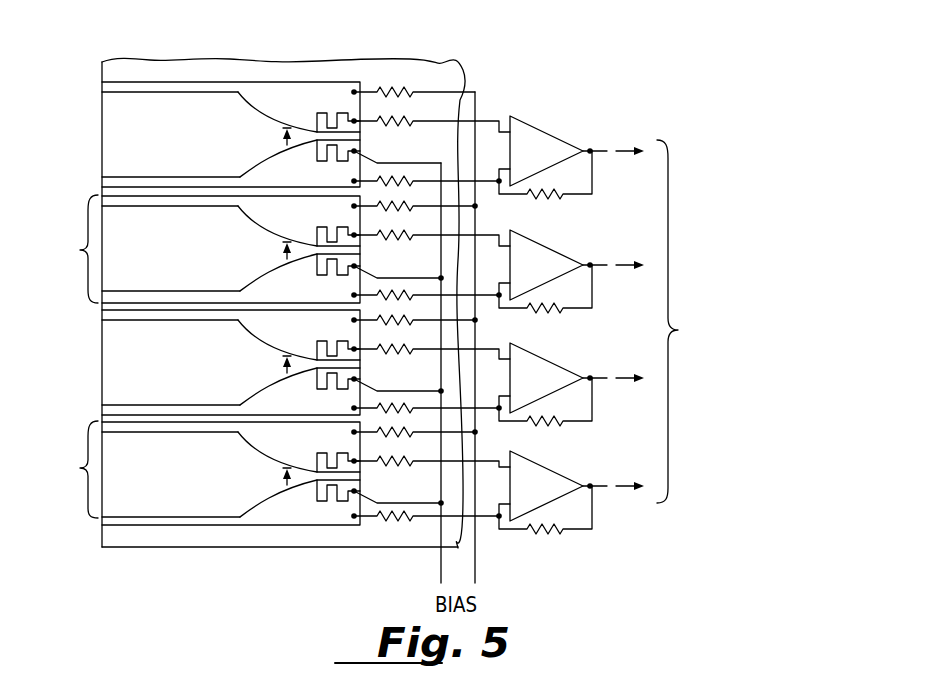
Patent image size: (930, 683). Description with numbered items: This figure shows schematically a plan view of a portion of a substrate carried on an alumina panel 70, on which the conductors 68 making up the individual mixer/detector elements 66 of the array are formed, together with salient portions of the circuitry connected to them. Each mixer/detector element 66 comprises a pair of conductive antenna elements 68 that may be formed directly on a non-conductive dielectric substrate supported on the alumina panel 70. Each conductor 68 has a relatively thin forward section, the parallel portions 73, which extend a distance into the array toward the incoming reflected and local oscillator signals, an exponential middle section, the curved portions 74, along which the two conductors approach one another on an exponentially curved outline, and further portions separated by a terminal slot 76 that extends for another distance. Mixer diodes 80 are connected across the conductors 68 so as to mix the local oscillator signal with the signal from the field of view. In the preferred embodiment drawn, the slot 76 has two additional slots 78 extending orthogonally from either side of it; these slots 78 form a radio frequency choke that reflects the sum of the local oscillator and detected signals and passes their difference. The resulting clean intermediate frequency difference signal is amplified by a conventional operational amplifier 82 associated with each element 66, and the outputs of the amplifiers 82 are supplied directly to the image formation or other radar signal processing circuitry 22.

The signal processing circuitry 22 is at (728, 321).
The mixer/detector element 66 is at (76, 356).
The conductive antenna element 68 is at (123, 177).
The alumina panel 70 is at (297, 548).
The parallel portion 73 is at (188, 82).
The curved portion 74 is at (263, 110).
The slot 76 is at (358, 136).
The additional slot 78 is at (345, 111).
The mixer diode 80 is at (283, 136).
The operational amplifier 82 is at (547, 149).